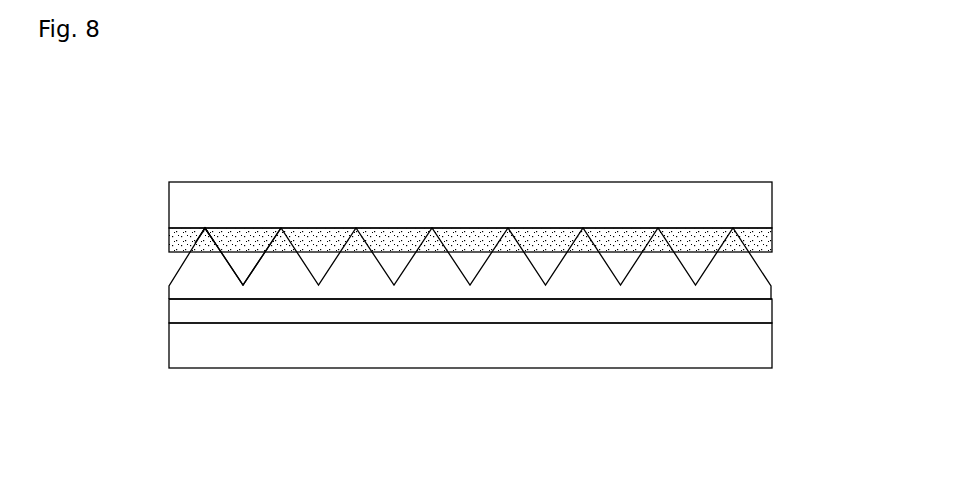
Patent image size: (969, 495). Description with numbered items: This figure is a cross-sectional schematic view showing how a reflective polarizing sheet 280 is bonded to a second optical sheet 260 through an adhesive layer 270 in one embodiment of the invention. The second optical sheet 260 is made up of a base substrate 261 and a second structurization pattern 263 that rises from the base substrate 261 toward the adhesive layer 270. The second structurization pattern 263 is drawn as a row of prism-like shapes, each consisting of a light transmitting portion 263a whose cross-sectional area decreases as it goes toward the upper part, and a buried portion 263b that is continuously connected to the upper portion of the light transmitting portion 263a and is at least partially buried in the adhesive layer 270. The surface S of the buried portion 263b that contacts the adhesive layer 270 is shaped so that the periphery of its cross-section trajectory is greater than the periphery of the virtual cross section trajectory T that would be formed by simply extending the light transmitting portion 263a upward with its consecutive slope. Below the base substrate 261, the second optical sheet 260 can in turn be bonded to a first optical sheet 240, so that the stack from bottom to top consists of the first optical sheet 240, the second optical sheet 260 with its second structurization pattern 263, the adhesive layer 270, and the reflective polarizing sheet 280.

The reflective polarizing sheet 280 is at (766, 203).
The adhesive layer 270 is at (769, 238).
The second optical sheet 260 is at (444, 306).
The base substrate 261 is at (417, 312).
The second structurization pattern 263 is at (289, 325).
The light transmitting portion 263a is at (203, 280).
The buried portion 263b is at (197, 240).
The first optical sheet 240 is at (769, 347).
The inclined surface of prism S is at (202, 243).
The virtual cross section trajectory T is at (208, 246).